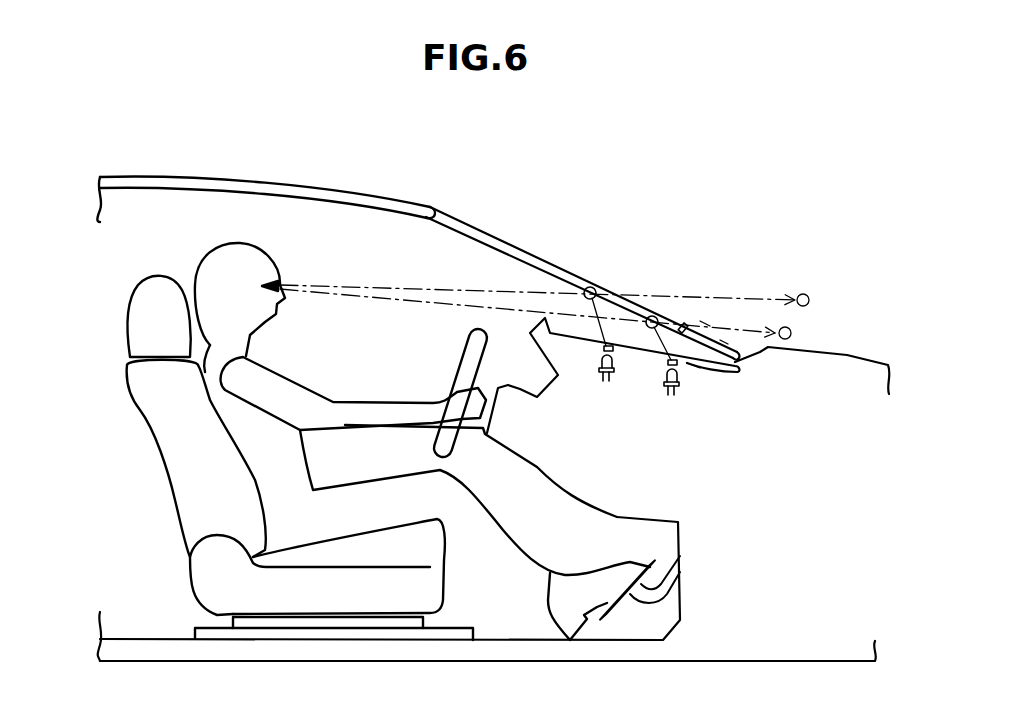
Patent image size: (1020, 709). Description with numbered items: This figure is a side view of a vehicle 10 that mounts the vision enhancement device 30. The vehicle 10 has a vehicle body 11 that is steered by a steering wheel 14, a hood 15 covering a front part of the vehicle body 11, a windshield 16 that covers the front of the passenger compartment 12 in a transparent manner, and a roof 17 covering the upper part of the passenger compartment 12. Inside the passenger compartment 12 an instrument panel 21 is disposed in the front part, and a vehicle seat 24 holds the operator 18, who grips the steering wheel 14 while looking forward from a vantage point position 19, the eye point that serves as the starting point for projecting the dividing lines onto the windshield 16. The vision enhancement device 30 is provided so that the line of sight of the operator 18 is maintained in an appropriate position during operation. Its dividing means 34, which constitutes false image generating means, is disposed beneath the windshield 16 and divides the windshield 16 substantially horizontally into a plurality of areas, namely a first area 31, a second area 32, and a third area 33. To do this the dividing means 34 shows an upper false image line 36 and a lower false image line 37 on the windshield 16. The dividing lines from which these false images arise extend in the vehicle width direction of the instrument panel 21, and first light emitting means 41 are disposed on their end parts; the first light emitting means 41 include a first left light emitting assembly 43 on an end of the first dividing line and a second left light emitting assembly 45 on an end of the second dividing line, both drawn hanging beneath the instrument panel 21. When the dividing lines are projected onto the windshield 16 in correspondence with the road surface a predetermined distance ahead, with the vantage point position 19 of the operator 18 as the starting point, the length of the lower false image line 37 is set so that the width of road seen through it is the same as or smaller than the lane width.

The vehicle 10 is at (723, 83).
The vehicle body 11 is at (688, 170).
The passenger compartment 12 is at (323, 233).
The steering wheel 14 is at (463, 374).
The hood 15 is at (850, 356).
The windshield 16 is at (460, 217).
The roof 17 is at (281, 184).
The operator 18 is at (203, 233).
The vantage point position 19 is at (253, 263).
The instrument panel 21 is at (560, 332).
The vehicle seat 24 is at (127, 361).
The vision enhancement device 30 is at (573, 162).
The first area 31 is at (537, 257).
The second area 32 is at (653, 316).
The third area 33 is at (720, 340).
The dividing means 34 is at (700, 321).
The upper false image line 36 is at (592, 288).
The lower false image line 37 is at (686, 325).
The first light emitting means 41 is at (653, 390).
The first left light emitting assembly 43 is at (625, 382).
The second left light emitting assembly 45 is at (688, 383).